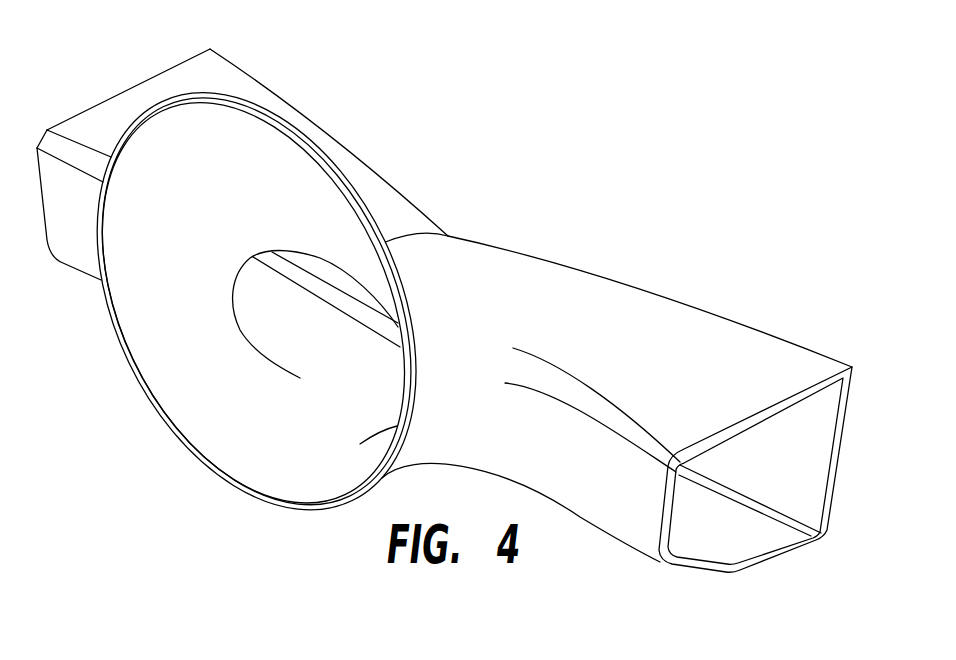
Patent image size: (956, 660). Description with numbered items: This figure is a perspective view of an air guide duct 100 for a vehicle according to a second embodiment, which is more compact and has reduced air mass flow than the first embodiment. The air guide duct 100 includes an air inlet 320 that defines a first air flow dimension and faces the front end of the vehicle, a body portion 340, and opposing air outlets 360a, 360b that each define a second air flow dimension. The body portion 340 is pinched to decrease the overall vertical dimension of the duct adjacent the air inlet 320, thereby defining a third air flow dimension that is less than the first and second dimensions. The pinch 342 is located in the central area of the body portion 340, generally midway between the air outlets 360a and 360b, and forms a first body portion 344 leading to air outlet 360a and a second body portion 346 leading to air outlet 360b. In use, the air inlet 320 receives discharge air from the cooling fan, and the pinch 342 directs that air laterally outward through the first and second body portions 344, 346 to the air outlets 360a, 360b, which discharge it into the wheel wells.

The air guide duct 100 is at (590, 206).
The air inlet 320 is at (201, 462).
The body portion 340 is at (392, 172).
The pinch 342 is at (450, 236).
The first body portion 344 is at (678, 315).
The second body portion 346 is at (287, 113).
The air outlet 360a is at (773, 557).
The air outlet 360b is at (128, 91).